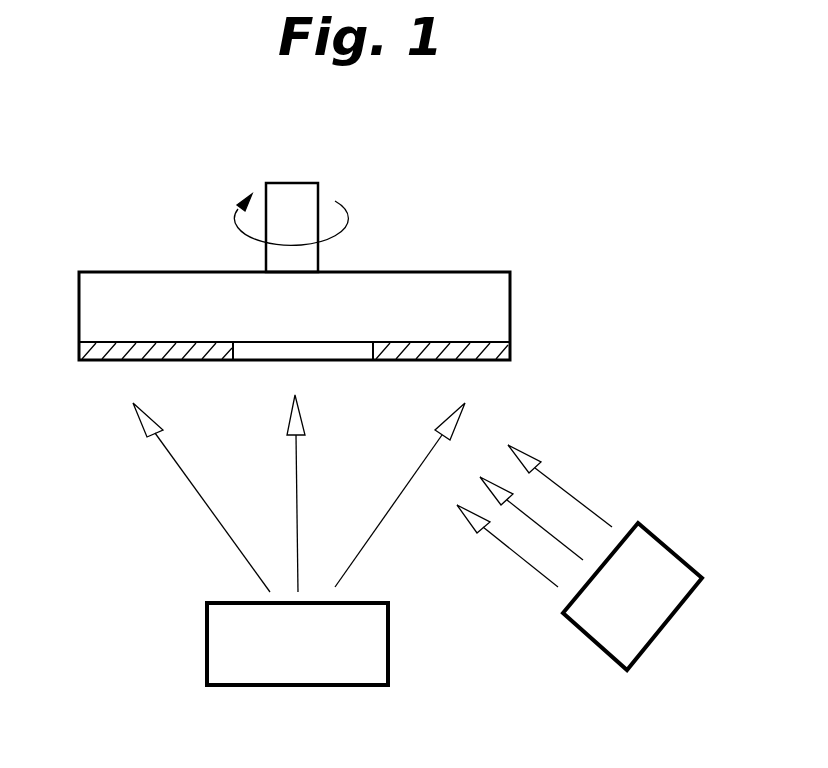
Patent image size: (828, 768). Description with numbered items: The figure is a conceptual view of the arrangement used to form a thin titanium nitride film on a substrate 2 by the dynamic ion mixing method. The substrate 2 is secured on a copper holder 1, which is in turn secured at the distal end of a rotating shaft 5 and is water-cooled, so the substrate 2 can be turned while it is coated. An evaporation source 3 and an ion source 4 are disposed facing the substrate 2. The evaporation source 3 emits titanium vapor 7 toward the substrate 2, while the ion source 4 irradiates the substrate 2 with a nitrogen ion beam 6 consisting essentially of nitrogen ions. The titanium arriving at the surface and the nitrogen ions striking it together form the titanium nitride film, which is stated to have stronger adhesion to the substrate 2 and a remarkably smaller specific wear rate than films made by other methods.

The copper holder 1 is at (498, 301).
The substrate 2 is at (510, 352).
The evaporation source 3 is at (391, 660).
The ion source 4 is at (680, 553).
The rotating shaft 5 is at (318, 185).
The nitrogen ion beam 6 is at (571, 495).
The titanium vapor 7 is at (203, 500).